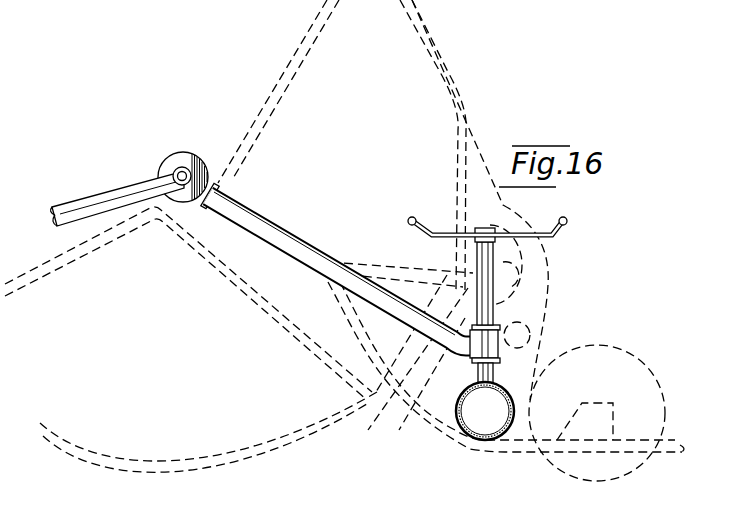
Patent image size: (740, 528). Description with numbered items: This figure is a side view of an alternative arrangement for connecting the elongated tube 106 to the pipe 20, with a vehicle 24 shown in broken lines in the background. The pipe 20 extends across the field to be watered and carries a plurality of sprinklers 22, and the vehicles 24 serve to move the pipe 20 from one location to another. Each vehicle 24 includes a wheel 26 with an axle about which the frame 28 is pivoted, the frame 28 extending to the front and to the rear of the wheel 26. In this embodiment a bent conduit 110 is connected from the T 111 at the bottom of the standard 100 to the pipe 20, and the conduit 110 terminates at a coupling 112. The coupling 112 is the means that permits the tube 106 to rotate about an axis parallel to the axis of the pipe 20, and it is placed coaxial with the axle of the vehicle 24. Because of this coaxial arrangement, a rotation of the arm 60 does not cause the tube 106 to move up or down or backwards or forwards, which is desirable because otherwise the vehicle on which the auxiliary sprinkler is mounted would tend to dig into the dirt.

The pipe 20 is at (500, 386).
The sprinklers 22 is at (552, 237).
The vehicle 24 is at (366, 443).
The wheel 26 is at (298, 438).
The frame 28 is at (296, 322).
The arm 60 is at (302, 60).
The standard 100 is at (458, 258).
The elongated tube 106 is at (134, 189).
The bent conduit 110 is at (258, 217).
The T 111 is at (500, 357).
The coupling 112 is at (181, 155).